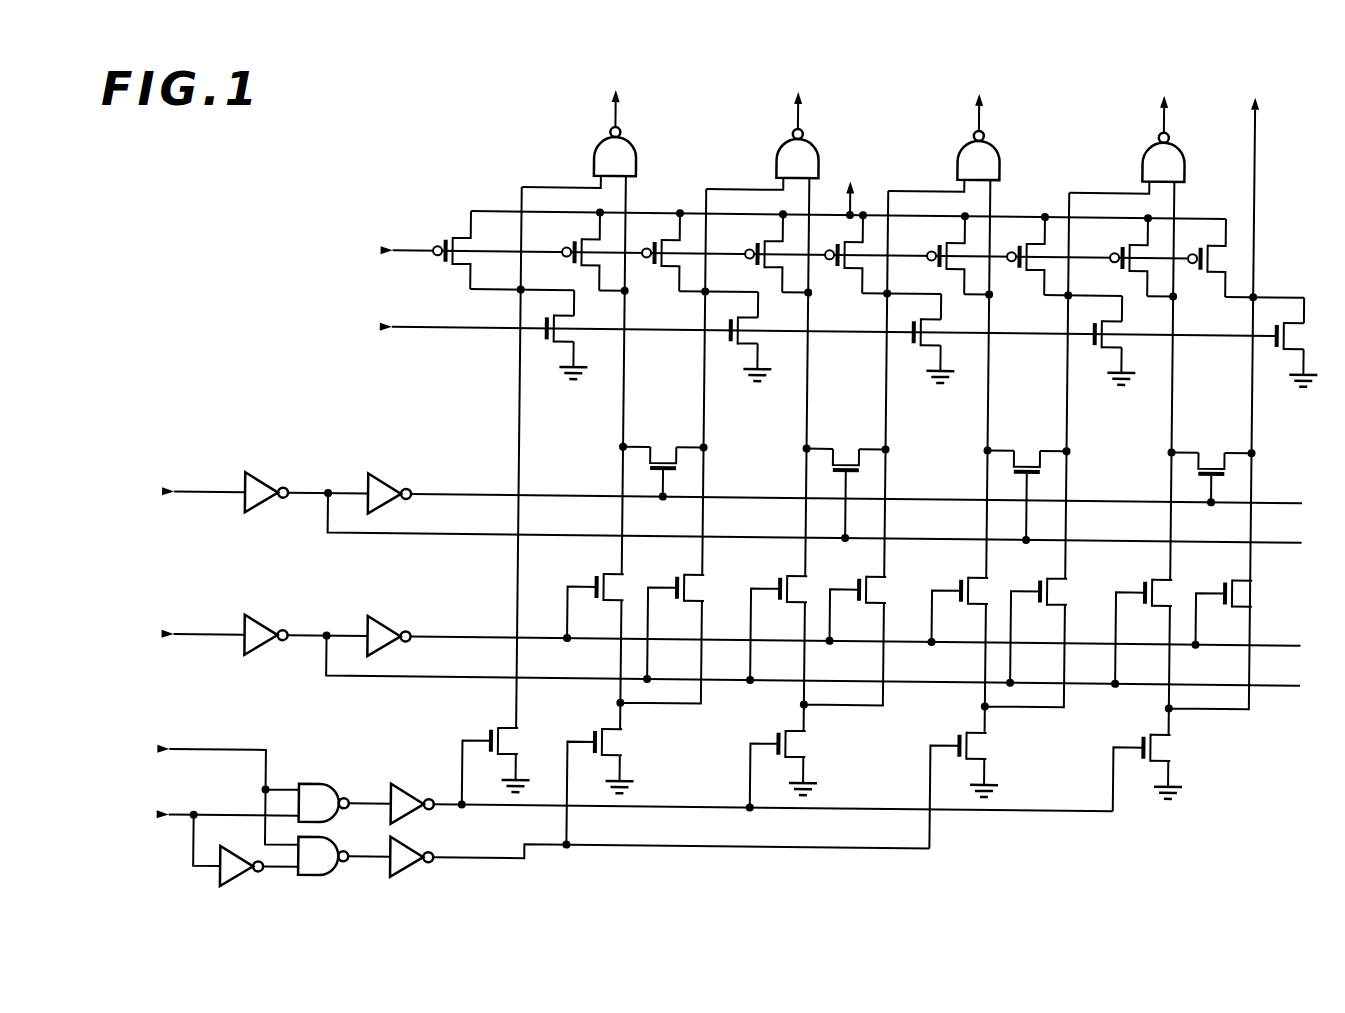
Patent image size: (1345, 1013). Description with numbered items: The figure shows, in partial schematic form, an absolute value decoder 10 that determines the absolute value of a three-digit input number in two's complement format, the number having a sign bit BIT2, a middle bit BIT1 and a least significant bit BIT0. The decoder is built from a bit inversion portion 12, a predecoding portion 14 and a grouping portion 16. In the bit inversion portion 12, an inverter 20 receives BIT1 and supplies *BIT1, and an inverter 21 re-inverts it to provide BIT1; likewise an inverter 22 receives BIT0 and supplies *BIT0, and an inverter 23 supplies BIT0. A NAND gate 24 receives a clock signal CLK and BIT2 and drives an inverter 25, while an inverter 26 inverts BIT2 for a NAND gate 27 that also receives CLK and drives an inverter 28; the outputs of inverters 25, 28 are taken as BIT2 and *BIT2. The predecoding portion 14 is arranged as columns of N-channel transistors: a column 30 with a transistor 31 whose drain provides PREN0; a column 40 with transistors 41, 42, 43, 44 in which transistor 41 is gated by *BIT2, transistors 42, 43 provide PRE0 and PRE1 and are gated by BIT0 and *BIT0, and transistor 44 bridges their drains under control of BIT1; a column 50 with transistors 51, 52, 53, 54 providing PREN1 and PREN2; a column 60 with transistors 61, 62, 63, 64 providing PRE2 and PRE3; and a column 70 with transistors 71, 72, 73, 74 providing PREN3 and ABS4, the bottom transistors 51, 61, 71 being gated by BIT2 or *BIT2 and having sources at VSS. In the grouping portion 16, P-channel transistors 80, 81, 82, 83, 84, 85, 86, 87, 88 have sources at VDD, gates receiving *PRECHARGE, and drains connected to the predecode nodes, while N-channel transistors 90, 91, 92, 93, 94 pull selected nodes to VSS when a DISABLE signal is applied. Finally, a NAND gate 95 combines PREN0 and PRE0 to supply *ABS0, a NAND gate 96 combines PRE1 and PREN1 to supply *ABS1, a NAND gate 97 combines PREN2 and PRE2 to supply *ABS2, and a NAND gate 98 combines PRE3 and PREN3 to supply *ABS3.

The absolute value decoder 10 is at (192, 189).
The bit inversion portion 12 is at (258, 445).
The predecoding portion 14 is at (489, 491).
The grouping portion 16 is at (492, 190).
The inverter 20 is at (258, 476).
The inverter 21 is at (378, 476).
The inverter 22 is at (259, 618).
The inverter 23 is at (384, 618).
The NAND gate 24 is at (342, 789).
The inverter 25 is at (414, 784).
The inverter 26 is at (250, 886).
The NAND gate 27 is at (340, 880).
The inverter 28 is at (412, 880).
The column 30 is at (490, 545).
The N-channel transistor 31 is at (506, 727).
The column 40 is at (637, 539).
The N-channel transistor 41 is at (610, 729).
The N-channel transistor 42 is at (598, 576).
The N-channel transistor 43 is at (679, 576).
The N-channel transistor 44 is at (668, 477).
The column 50 is at (816, 541).
The N-channel transistor 51 is at (793, 729).
The N-channel transistor 52 is at (782, 576).
The N-channel transistor 53 is at (861, 576).
The N-channel transistor 54 is at (850, 474).
The column 60 is at (1004, 539).
The N-channel transistor 61 is at (973, 729).
The N-channel transistor 62 is at (963, 576).
The N-channel transistor 63 is at (1042, 576).
The N-channel transistor 64 is at (1032, 475).
The column 70 is at (1185, 485).
The N-channel transistor 71 is at (1157, 729).
The N-channel transistor 72 is at (1147, 576).
The N-channel transistor 73 is at (1227, 576).
The N-channel transistor 74 is at (1207, 443).
The P-channel transistor 80 is at (460, 235).
The P-channel transistor 81 is at (587, 272).
The P-channel transistor 82 is at (667, 272).
The P-channel transistor 83 is at (770, 272).
The P-channel transistor 84 is at (850, 272).
The P-channel transistor 85 is at (952, 270).
The P-channel transistor 86 is at (1032, 270).
The P-channel transistor 87 is at (1135, 270).
The P-channel transistor 88 is at (1213, 270).
The N-channel transistor 90 is at (543, 343).
The N-channel transistor 91 is at (727, 343).
The N-channel transistor 92 is at (910, 341).
The N-channel transistor 93 is at (1091, 341).
The N-channel transistor 94 is at (1272, 344).
The NAND gate 95 is at (637, 165).
The NAND gate 96 is at (775, 153).
The NAND gate 97 is at (1004, 170).
The NAND gate 98 is at (1180, 173).